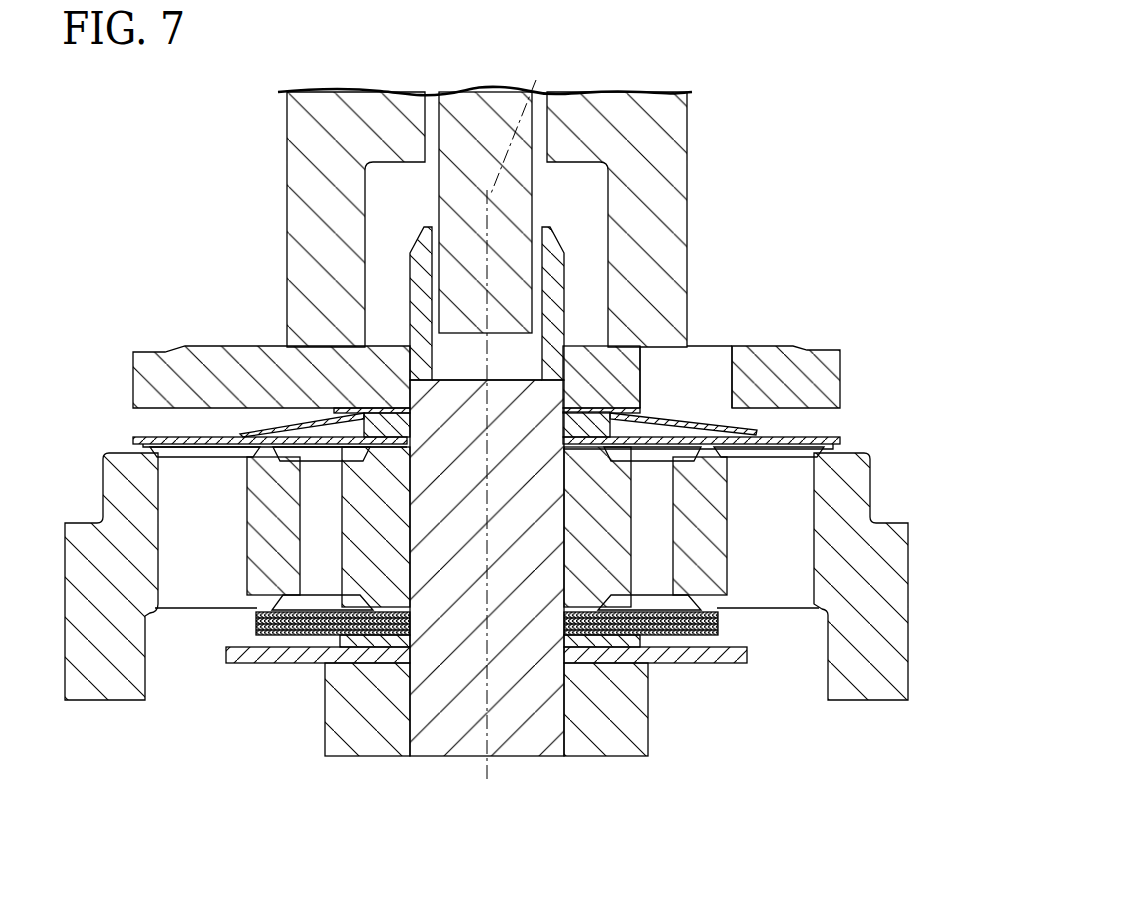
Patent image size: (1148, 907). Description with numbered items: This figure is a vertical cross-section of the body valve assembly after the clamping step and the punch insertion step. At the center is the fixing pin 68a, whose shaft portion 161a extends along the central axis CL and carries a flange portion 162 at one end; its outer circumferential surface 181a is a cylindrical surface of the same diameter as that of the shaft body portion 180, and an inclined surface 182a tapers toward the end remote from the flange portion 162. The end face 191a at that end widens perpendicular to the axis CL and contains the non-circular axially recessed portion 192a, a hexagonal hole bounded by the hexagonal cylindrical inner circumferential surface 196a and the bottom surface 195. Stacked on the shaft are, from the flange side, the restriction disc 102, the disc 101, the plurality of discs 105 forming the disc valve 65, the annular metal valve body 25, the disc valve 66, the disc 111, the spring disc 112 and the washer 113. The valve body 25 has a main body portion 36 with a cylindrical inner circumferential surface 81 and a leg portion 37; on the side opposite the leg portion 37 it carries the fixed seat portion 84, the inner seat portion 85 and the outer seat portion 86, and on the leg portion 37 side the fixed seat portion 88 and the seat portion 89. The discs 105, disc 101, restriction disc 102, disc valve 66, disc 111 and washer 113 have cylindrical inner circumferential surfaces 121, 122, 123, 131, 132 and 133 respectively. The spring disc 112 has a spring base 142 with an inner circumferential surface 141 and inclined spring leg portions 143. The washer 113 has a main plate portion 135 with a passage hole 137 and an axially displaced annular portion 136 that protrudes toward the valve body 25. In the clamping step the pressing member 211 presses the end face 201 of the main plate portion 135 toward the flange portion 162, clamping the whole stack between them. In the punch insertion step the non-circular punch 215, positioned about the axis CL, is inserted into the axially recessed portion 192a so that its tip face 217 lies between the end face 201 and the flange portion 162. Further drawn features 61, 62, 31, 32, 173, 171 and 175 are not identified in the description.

The punch 215 is at (500, 132).
The inner circumferential surface 141 is at (410, 410).
The inner circumferential surface 132 is at (410, 425).
The inner circumferential surface 131 is at (410, 440).
The central axis CL is at (522, 414).
The tip face 217 is at (552, 230).
The end face 191a is at (548, 260).
The pressing member 211 is at (670, 115).
The inclined surface 182a is at (420, 300).
The axially recessed portion 192a is at (525, 265).
The inner circumferential surface 133 is at (415, 340).
The inner circumferential surface 196a is at (527, 300).
The fixed seat portion 84 is at (403, 385).
The spring disc 112 is at (700, 413).
The inner seat portion 85 is at (240, 425).
The end face 201 is at (748, 365).
The washer 113 is at (840, 348).
The disc 111 is at (305, 395).
The spring leg portions 143 is at (180, 380).
The main plate portion 135 is at (735, 352).
The annular portion 136 is at (823, 370).
The spring base 142 is at (290, 428).
The bottom surface 195 is at (523, 340).
The disc valve 66 is at (170, 430).
The passage hole 137 is at (735, 383).
The valve body 25 is at (869, 455).
The outer seat portion 86 is at (137, 438).
The bearing 61 is at (313, 487).
The housing upper portion 31 is at (872, 493).
The bearing holder 62 is at (173, 507).
The main body portion 36 is at (887, 540).
The housing outer wall 32 is at (910, 617).
The outer circumferential surface 181a is at (377, 523).
The shaft body portion 180 is at (415, 545).
The discs 105 is at (257, 622).
The disc valve 65 is at (272, 637).
The block side surface 173 is at (325, 705).
The flange portion 162 is at (355, 735).
The fixing pin 68a is at (378, 757).
The inner circumferential surface 122 is at (412, 690).
The inner circumferential surface 121 is at (410, 623).
The shaft portion 161a is at (500, 600).
The inner circumferential surface 81 is at (562, 527).
The inner circumferential surface 123 is at (571, 655).
The fixed seat portion 88 is at (583, 618).
The disc 101 is at (608, 650).
The lower block 171 is at (650, 740).
The plate portion 175 is at (647, 652).
The seat portion 89 is at (707, 640).
The restriction disc 102 is at (748, 652).
The leg portion 37 is at (862, 683).